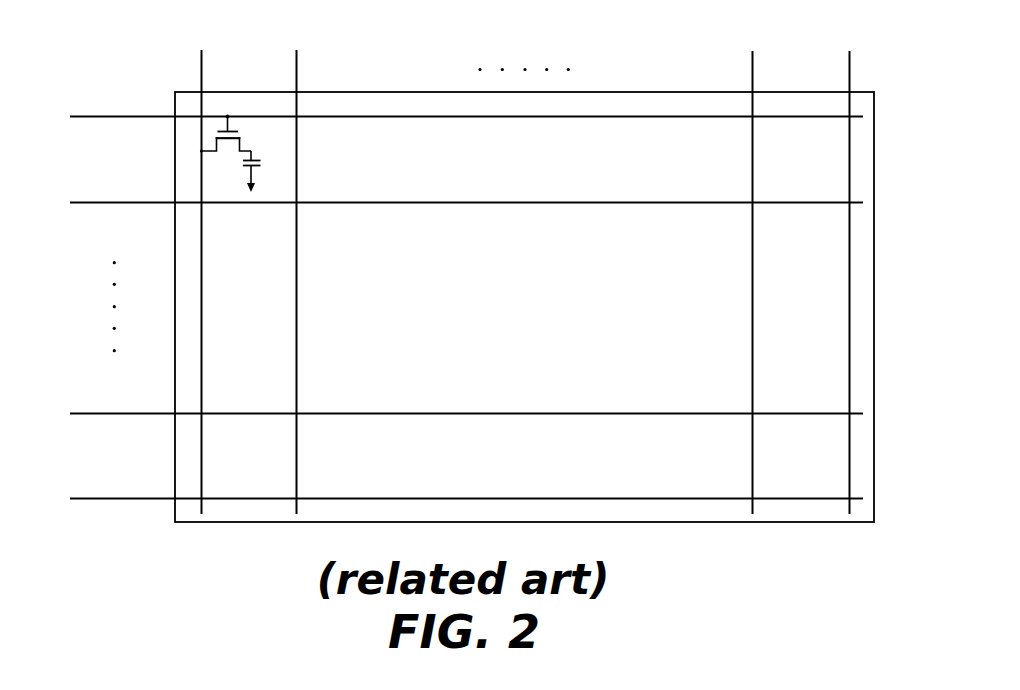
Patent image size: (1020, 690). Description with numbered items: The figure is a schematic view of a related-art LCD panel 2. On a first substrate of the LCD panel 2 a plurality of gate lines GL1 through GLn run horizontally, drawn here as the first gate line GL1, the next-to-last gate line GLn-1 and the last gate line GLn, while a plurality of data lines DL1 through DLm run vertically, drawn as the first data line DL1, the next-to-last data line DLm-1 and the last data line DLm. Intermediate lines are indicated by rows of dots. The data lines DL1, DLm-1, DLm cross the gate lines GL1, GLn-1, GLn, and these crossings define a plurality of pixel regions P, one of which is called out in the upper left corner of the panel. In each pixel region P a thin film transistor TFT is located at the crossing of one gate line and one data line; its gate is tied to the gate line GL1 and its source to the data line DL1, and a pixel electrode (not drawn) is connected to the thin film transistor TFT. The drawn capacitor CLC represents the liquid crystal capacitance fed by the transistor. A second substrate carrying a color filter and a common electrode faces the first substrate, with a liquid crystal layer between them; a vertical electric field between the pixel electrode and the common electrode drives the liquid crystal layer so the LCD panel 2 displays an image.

The LCD panel 2 is at (875, 122).
The pixel region P is at (281, 154).
The thin film transistor TFT is at (225, 145).
The liquid crystal capacitor CLC is at (267, 171).
The data line DL1 is at (200, 267).
The data line DLm-1 is at (755, 268).
The data line DLm is at (847, 268).
The gate line GL1 is at (443, 118).
The gate line GLn-1 is at (433, 415).
The gate line GLn is at (440, 500).